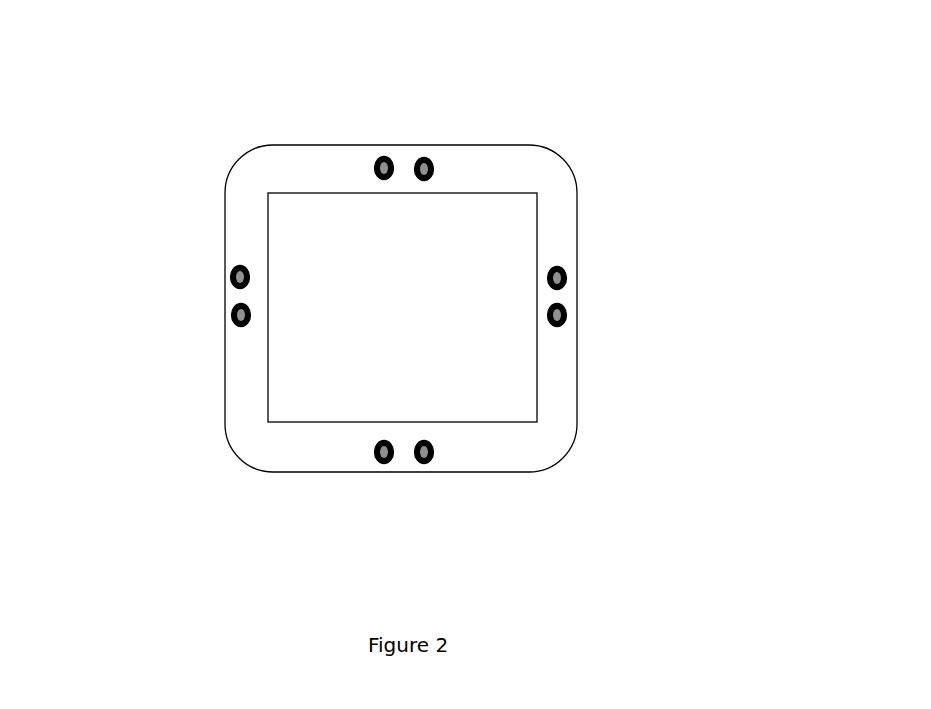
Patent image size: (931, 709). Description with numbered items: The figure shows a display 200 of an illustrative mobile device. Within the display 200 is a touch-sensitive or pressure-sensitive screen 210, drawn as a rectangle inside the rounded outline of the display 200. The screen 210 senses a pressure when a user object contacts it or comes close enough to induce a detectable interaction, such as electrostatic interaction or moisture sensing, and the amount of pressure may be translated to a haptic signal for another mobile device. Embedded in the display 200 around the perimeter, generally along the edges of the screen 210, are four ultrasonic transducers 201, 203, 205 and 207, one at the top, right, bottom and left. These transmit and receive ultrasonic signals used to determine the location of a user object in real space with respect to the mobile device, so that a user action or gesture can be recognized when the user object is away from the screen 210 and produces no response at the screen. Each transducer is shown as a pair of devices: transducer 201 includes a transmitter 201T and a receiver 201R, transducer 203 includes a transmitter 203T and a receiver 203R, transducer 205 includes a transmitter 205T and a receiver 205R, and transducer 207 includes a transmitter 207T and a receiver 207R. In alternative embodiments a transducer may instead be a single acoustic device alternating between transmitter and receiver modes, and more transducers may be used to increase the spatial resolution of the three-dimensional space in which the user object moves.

The display 200 is at (718, 142).
The screen 210 is at (515, 207).
The ultrasonic transducer 201 is at (423, 90).
The transmitter 201T is at (380, 158).
The receiver 201R is at (431, 159).
The ultrasonic transducer 203 is at (638, 306).
The transmitter 203T is at (567, 273).
The receiver 203R is at (563, 322).
The ultrasonic transducer 205 is at (408, 520).
The transmitter 205T is at (379, 462).
The receiver 205R is at (430, 462).
The ultrasonic transducer 207 is at (150, 301).
The transmitter 207T is at (232, 271).
The receiver 207R is at (232, 323).